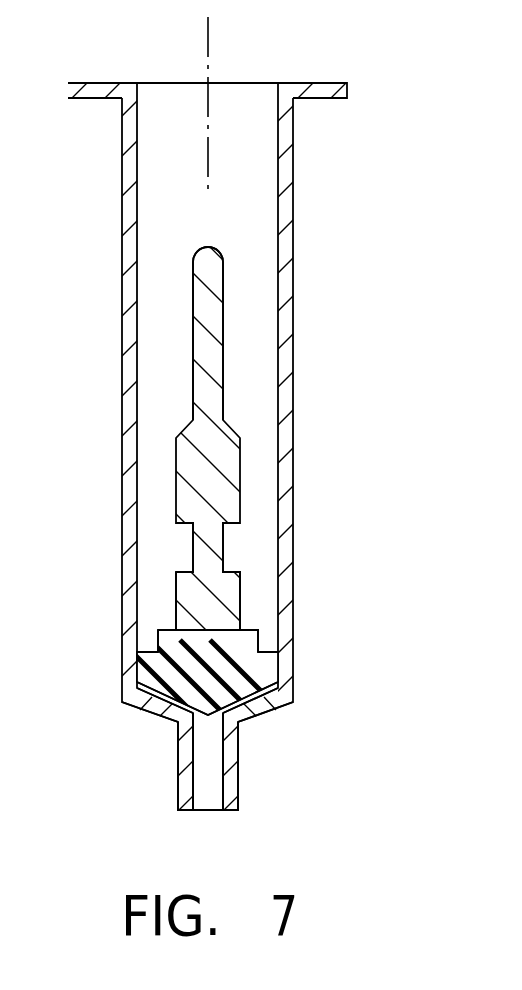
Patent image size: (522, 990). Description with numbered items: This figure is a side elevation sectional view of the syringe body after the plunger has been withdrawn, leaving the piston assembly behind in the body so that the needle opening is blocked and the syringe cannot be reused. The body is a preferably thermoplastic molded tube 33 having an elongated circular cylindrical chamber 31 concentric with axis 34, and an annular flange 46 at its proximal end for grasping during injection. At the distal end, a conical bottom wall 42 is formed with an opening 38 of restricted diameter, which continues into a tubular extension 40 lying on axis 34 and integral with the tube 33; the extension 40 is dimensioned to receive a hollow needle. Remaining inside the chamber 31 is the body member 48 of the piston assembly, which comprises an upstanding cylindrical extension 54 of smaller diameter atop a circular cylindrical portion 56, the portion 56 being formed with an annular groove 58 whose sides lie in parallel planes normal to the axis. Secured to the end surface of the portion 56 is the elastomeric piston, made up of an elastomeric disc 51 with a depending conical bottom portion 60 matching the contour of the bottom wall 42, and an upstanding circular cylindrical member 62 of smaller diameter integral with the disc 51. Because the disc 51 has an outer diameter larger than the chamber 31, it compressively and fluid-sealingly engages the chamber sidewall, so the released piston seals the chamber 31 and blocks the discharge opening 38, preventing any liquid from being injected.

The chamber 31 is at (168, 166).
The tube 33 is at (295, 215).
The axis 34 is at (207, 32).
The opening 38 is at (212, 768).
The tubular extension 40 is at (182, 773).
The conical bottom wall 42 is at (268, 709).
The annular flange 46 is at (347, 88).
The body member 48 is at (213, 457).
The elastomeric disc 51 is at (248, 667).
The upstanding cylindrical extension 54 is at (200, 287).
The circular cylindrical portion 56 is at (213, 602).
The annular groove 58 is at (187, 550).
The conical bottom portion 60 is at (167, 667).
The upstanding circular cylindrical member 62 is at (167, 640).